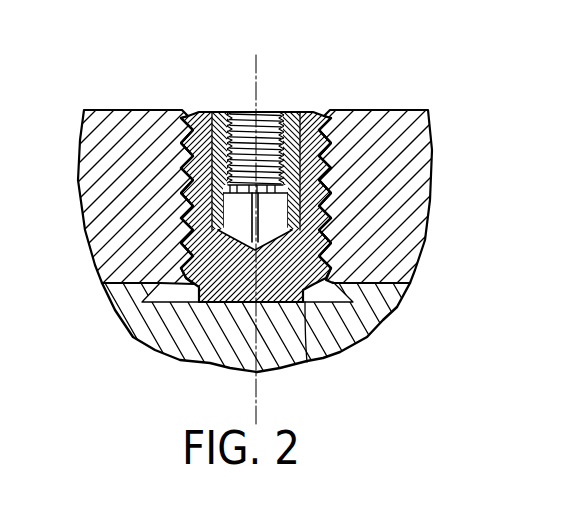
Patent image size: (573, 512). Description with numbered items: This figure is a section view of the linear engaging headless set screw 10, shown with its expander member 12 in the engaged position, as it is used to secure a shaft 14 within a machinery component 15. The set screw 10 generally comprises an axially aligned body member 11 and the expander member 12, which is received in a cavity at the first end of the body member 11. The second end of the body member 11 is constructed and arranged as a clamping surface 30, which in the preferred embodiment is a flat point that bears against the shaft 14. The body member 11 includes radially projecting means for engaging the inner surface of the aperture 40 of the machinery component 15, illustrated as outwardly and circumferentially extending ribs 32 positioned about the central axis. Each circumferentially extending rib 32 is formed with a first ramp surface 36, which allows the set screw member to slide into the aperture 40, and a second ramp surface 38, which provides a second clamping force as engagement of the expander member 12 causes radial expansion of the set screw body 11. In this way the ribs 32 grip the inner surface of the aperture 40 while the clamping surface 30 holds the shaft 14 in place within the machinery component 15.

The linear engaging headless set screw 10 is at (345, 73).
The body member 11 is at (195, 112).
The expander member 12 is at (217, 111).
The shaft 14 is at (372, 315).
The machinery component 15 is at (402, 110).
The clamping surface 30 is at (308, 362).
The circumferentially extending rib 32 is at (337, 208).
The first ramp surface 36 is at (342, 222).
The second ramp surface 38 is at (361, 177).
The aperture 40 is at (177, 220).